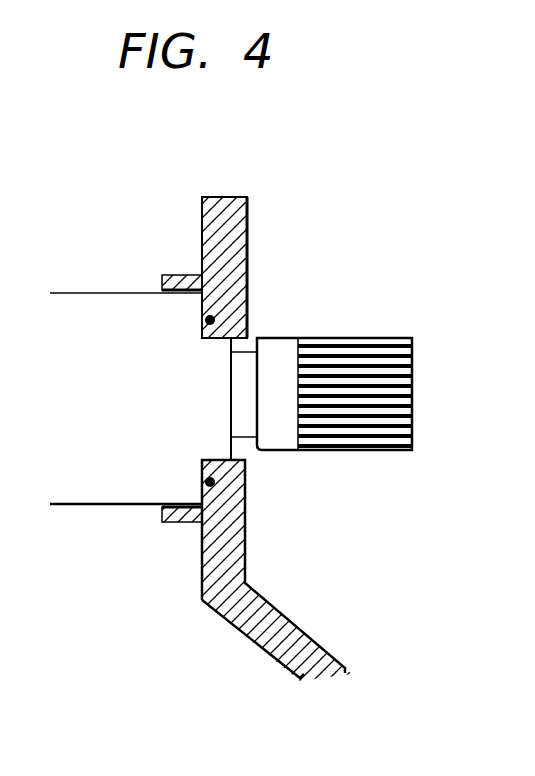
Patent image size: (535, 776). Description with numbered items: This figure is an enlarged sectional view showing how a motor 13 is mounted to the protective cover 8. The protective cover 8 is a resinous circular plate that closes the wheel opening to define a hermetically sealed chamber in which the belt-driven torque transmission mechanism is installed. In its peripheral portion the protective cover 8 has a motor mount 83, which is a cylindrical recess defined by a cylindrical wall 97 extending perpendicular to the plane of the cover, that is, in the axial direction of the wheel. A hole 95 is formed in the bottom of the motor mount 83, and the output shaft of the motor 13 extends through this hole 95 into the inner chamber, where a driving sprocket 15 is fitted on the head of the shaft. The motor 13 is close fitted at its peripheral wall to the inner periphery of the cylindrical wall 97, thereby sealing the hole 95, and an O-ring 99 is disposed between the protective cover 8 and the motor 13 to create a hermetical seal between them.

The protective cover 8 is at (308, 663).
The motor 13 is at (110, 473).
The driving sprocket 15 is at (373, 432).
The motor mount 83 is at (158, 262).
The hole 95 is at (232, 374).
The cylindrical wall 97 is at (185, 520).
The O-ring 99 is at (210, 320).